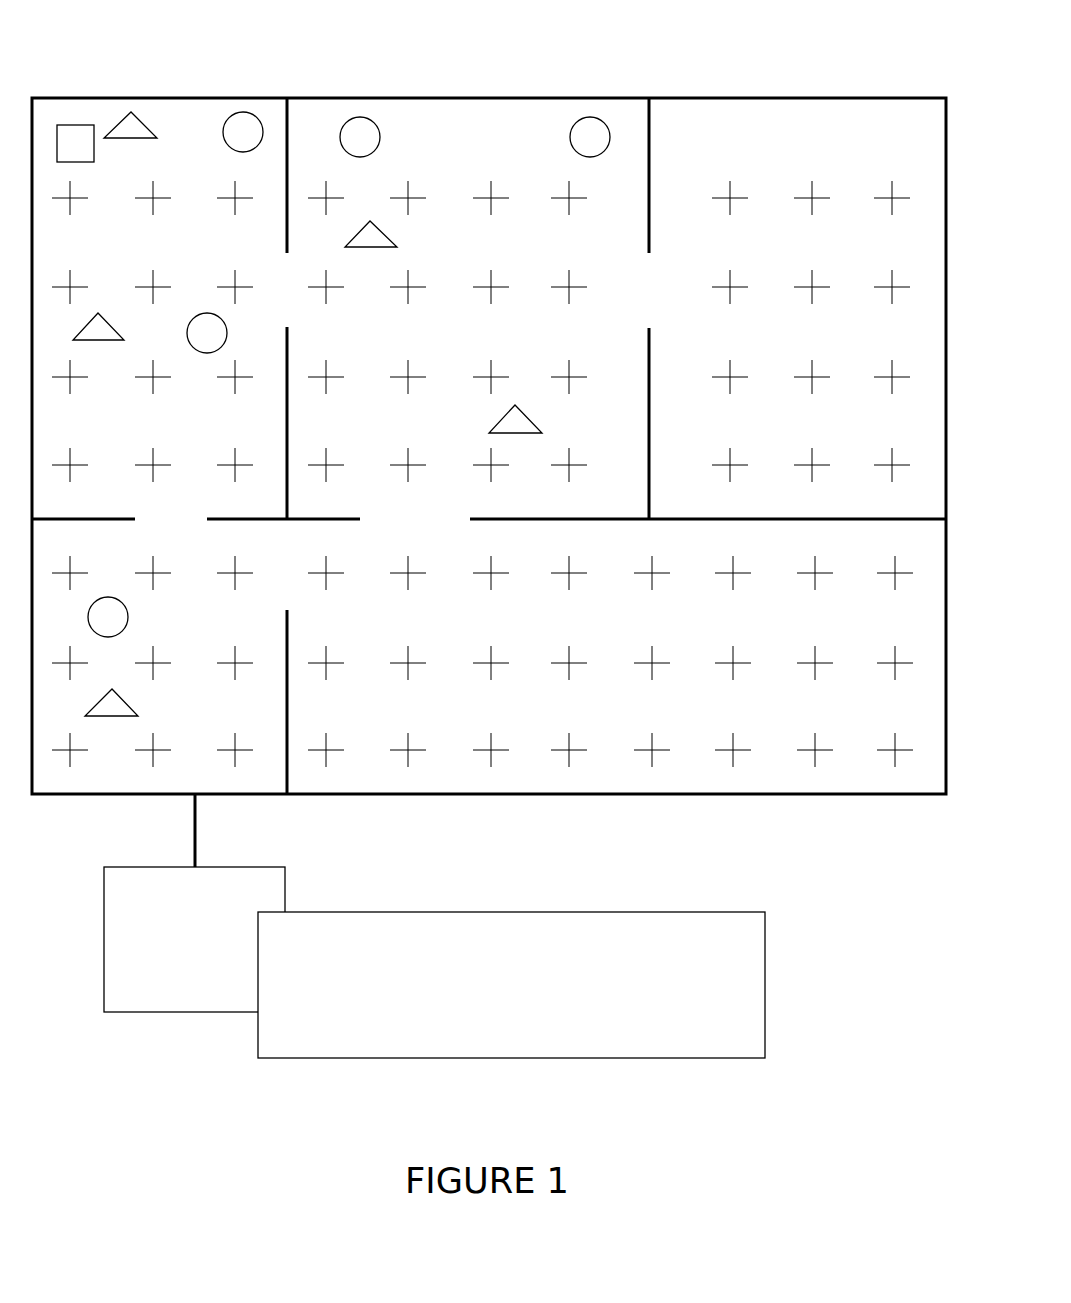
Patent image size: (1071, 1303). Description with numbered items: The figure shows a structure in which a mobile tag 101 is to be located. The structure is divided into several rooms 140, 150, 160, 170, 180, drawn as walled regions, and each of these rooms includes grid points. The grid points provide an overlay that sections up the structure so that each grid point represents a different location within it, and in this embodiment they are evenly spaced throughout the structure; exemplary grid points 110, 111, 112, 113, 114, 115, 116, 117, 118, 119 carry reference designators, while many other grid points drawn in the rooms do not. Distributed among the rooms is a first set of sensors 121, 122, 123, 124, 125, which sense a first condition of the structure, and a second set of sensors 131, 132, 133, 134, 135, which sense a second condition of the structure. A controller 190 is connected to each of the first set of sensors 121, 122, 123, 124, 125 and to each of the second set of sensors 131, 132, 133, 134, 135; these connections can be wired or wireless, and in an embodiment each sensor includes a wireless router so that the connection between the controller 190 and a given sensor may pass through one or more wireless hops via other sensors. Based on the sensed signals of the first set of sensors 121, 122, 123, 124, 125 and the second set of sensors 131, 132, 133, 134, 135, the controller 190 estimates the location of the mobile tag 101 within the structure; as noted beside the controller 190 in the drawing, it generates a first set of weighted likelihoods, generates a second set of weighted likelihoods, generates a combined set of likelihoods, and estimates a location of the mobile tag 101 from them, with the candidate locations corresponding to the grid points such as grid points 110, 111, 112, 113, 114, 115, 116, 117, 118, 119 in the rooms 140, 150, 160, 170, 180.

The mobile tag 101 is at (76, 130).
The grid point 110 is at (64, 204).
The grid point 111 is at (142, 204).
The grid point 112 is at (225, 204).
The grid point 113 is at (336, 293).
The grid point 114 is at (417, 293).
The grid point 115 is at (501, 293).
The grid point 116 is at (68, 477).
The grid point 117 is at (155, 477).
The grid point 118 is at (237, 477).
The grid point 119 is at (241, 584).
The first set of sensors 121 is at (250, 104).
The first set of sensors 122 is at (242, 333).
The first set of sensors 123 is at (380, 121).
The first set of sensors 124 is at (597, 101).
The first set of sensors 125 is at (113, 585).
The second set of sensors 131 is at (141, 141).
The second set of sensors 132 is at (101, 345).
The second set of sensors 133 is at (382, 238).
The second set of sensors 134 is at (527, 423).
The second set of sensors 135 is at (124, 706).
The room 140 is at (211, 125).
The room 150 is at (483, 143).
The room 160 is at (837, 138).
The room 170 is at (110, 784).
The room 180 is at (873, 787).
The controller 190 is at (215, 983).